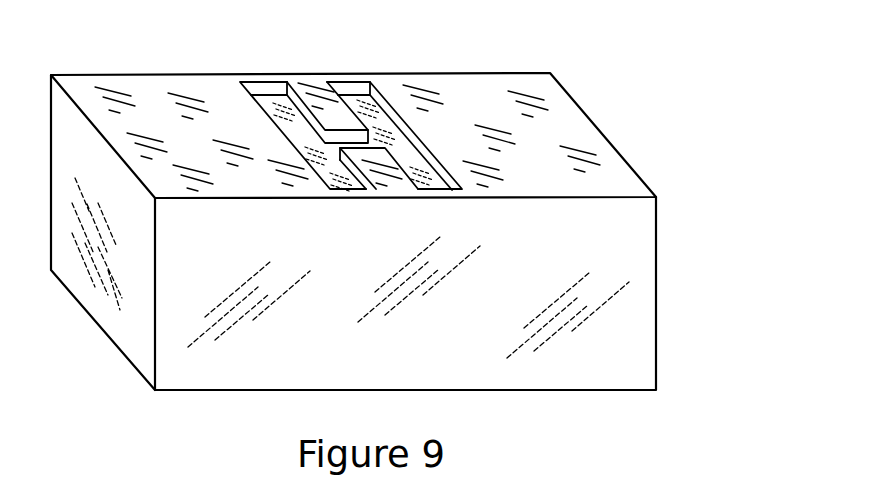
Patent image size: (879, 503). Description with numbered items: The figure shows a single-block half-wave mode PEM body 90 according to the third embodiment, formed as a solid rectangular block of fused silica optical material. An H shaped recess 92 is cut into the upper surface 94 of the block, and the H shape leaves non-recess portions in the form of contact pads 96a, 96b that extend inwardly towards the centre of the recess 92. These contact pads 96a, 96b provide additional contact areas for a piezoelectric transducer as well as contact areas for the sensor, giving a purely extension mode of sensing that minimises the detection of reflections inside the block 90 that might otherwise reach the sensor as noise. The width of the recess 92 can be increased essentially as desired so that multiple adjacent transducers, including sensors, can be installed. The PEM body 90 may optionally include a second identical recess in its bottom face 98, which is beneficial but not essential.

The PEM body 90 is at (645, 53).
The H shaped recess 92 is at (283, 105).
The upper surface 94 is at (543, 102).
The contact pad 96a is at (317, 107).
The contact pad 96b is at (377, 158).
The bottom face 98 is at (588, 398).